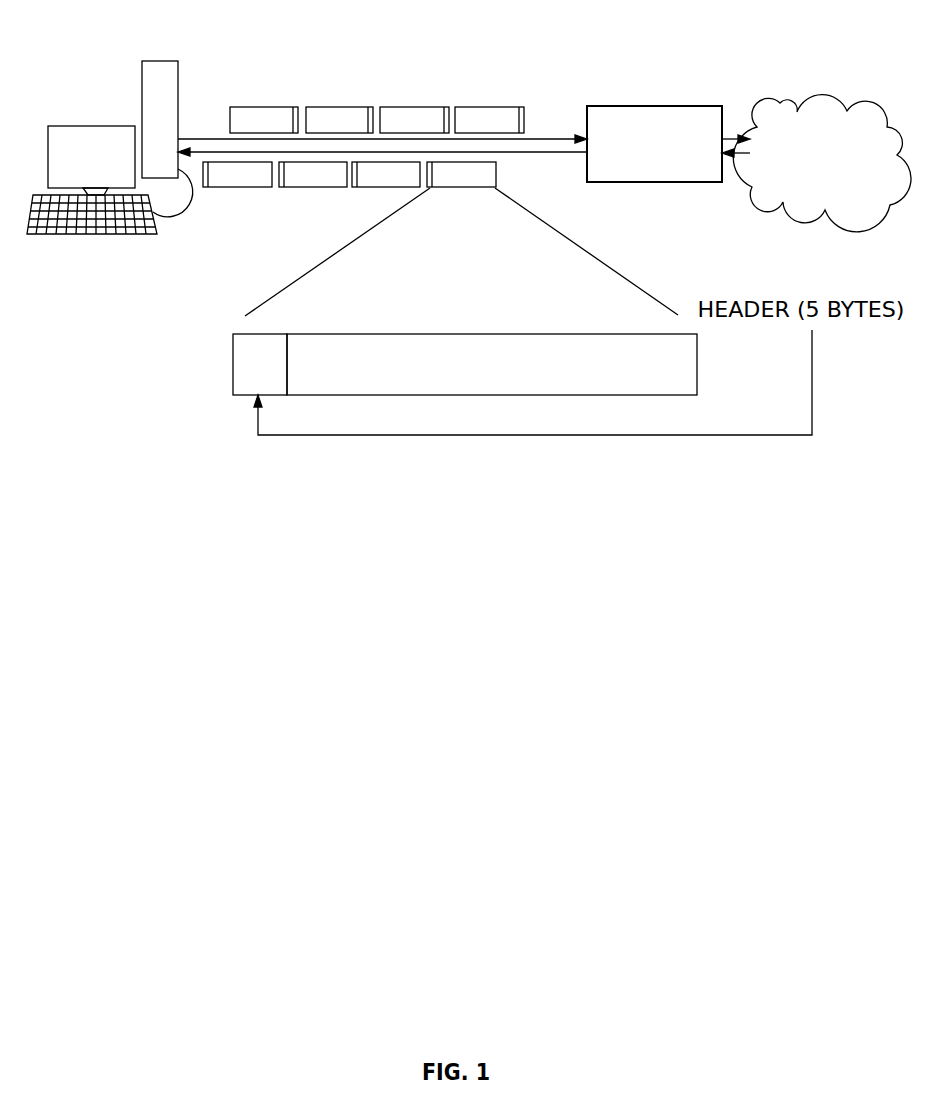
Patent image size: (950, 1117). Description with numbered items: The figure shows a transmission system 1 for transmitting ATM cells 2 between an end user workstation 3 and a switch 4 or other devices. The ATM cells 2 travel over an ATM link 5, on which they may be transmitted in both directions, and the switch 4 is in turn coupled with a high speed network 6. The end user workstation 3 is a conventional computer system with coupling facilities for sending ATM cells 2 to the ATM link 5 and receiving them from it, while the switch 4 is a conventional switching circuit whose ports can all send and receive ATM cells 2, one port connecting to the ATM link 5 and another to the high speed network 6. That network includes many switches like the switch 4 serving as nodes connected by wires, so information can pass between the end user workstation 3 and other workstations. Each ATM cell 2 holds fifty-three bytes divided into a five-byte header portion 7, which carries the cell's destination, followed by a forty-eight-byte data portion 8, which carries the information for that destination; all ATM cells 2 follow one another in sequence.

The transmission system 1 is at (138, 312).
The ATM cells 2 is at (375, 163).
The end user workstation 3 is at (60, 127).
The switch 4 is at (643, 106).
The ATM link 5 is at (202, 152).
The high speed network 6 is at (820, 92).
The header portion 7 is at (262, 334).
The data portion 8 is at (422, 334).